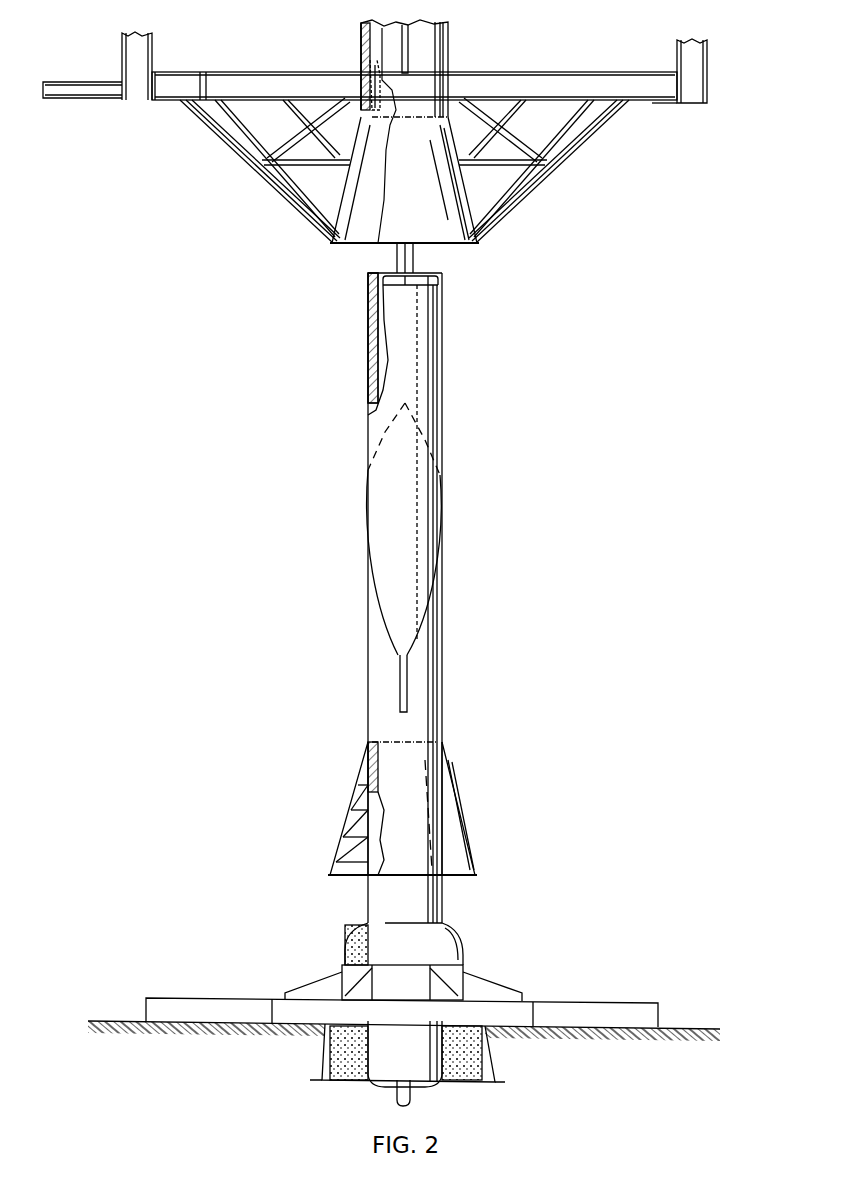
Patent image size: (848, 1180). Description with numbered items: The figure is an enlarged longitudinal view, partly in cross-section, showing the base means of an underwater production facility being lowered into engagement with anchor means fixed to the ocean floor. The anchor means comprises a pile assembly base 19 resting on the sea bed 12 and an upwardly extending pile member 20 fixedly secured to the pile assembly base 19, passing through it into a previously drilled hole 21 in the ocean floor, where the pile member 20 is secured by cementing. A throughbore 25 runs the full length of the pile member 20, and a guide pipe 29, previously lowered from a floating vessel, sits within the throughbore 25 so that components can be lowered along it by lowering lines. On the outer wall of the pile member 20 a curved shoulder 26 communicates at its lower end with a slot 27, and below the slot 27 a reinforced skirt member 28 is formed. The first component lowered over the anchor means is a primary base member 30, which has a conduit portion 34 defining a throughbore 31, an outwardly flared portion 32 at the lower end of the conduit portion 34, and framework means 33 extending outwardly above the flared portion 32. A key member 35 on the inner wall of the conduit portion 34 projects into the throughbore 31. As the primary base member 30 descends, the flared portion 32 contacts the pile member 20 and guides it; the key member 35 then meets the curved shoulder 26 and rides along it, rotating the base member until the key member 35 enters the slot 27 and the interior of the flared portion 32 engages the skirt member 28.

The sea bed 12 is at (113, 1020).
The pile assembly base 19 is at (568, 1002).
The pile member 20 is at (443, 648).
The drilled hole 21 is at (330, 1050).
The throughbore 25 is at (378, 331).
The curved shoulder 26 is at (443, 555).
The slot 27 is at (400, 683).
The reinforced skirt member 28 is at (420, 836).
The guide pipe 29 is at (413, 262).
The primary base member 30 is at (458, 52).
The throughbore 31 is at (375, 80).
The outwardly flared portion 32 is at (420, 212).
The framework means 33 is at (568, 82).
The conduit portion 34 is at (437, 22).
The key member 35 is at (363, 42).